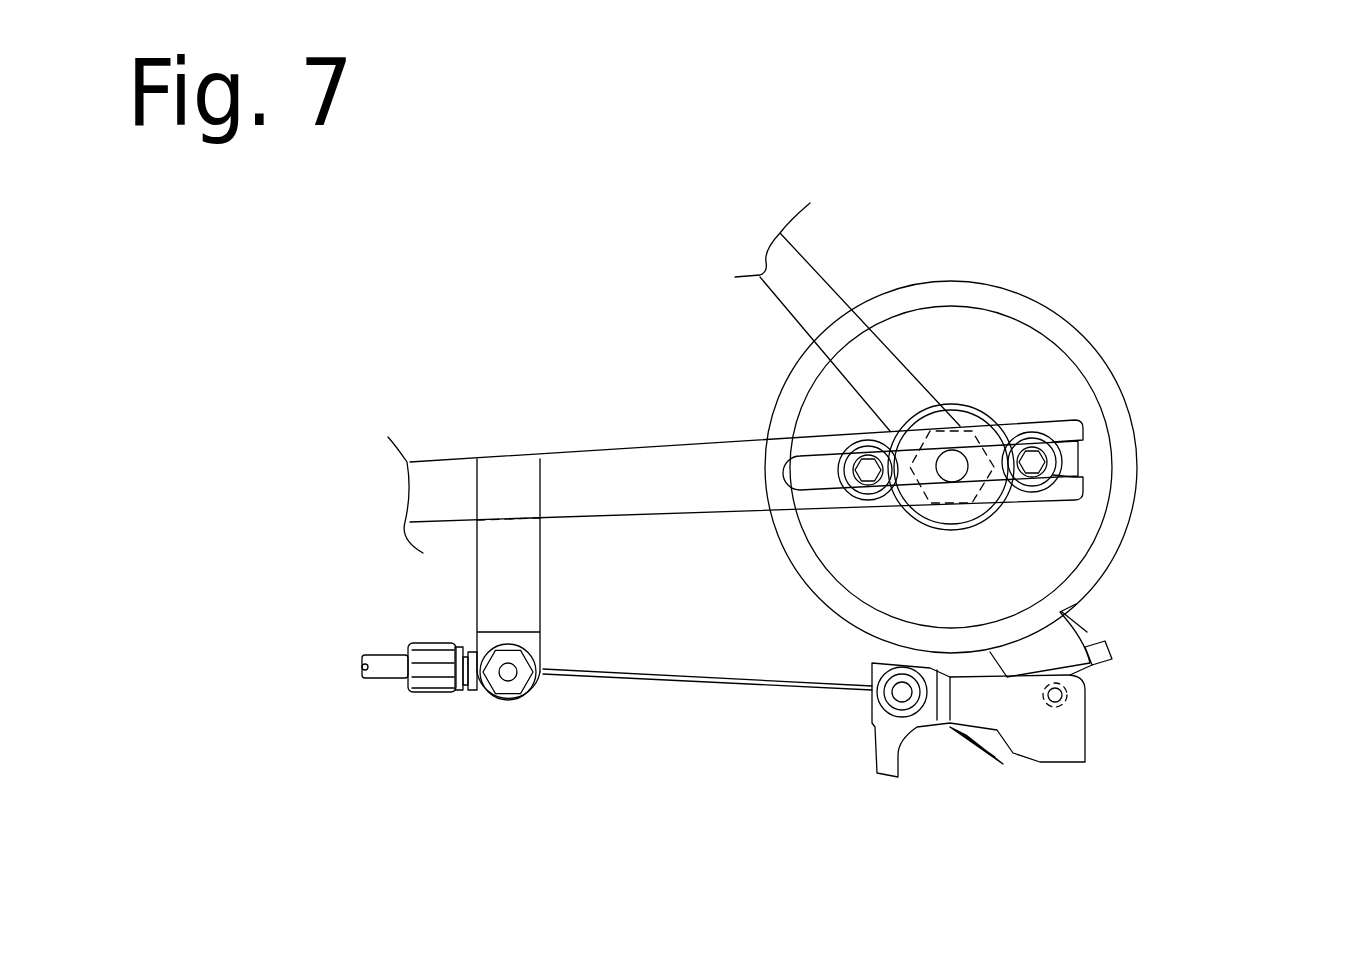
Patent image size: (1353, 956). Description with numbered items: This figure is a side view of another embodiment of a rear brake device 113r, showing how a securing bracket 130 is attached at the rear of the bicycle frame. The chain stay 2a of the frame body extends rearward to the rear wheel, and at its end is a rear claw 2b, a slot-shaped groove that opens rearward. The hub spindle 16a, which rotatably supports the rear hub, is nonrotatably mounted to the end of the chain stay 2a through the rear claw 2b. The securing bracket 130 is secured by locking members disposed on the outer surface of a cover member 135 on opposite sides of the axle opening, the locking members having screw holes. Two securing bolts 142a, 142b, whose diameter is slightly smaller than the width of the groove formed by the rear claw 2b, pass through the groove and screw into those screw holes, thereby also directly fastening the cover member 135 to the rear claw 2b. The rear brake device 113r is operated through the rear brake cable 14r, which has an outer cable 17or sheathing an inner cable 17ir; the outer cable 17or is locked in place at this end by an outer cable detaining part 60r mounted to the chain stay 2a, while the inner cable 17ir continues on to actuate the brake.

The chain stay 2a is at (443, 461).
The rear claw 2b is at (1083, 463).
The rear brake cable 14r is at (600, 695).
The hub spindle 16a is at (960, 458).
The inner cable 17ir is at (660, 682).
The outer cable 17or is at (378, 675).
The outer cable detaining part 60r is at (433, 692).
The rear brake device 113r is at (1021, 434).
The securing bracket 130 is at (1036, 300).
The cover member 135 is at (1073, 397).
The securing bolt 142a is at (850, 448).
The securing bolt 142b is at (1060, 477).